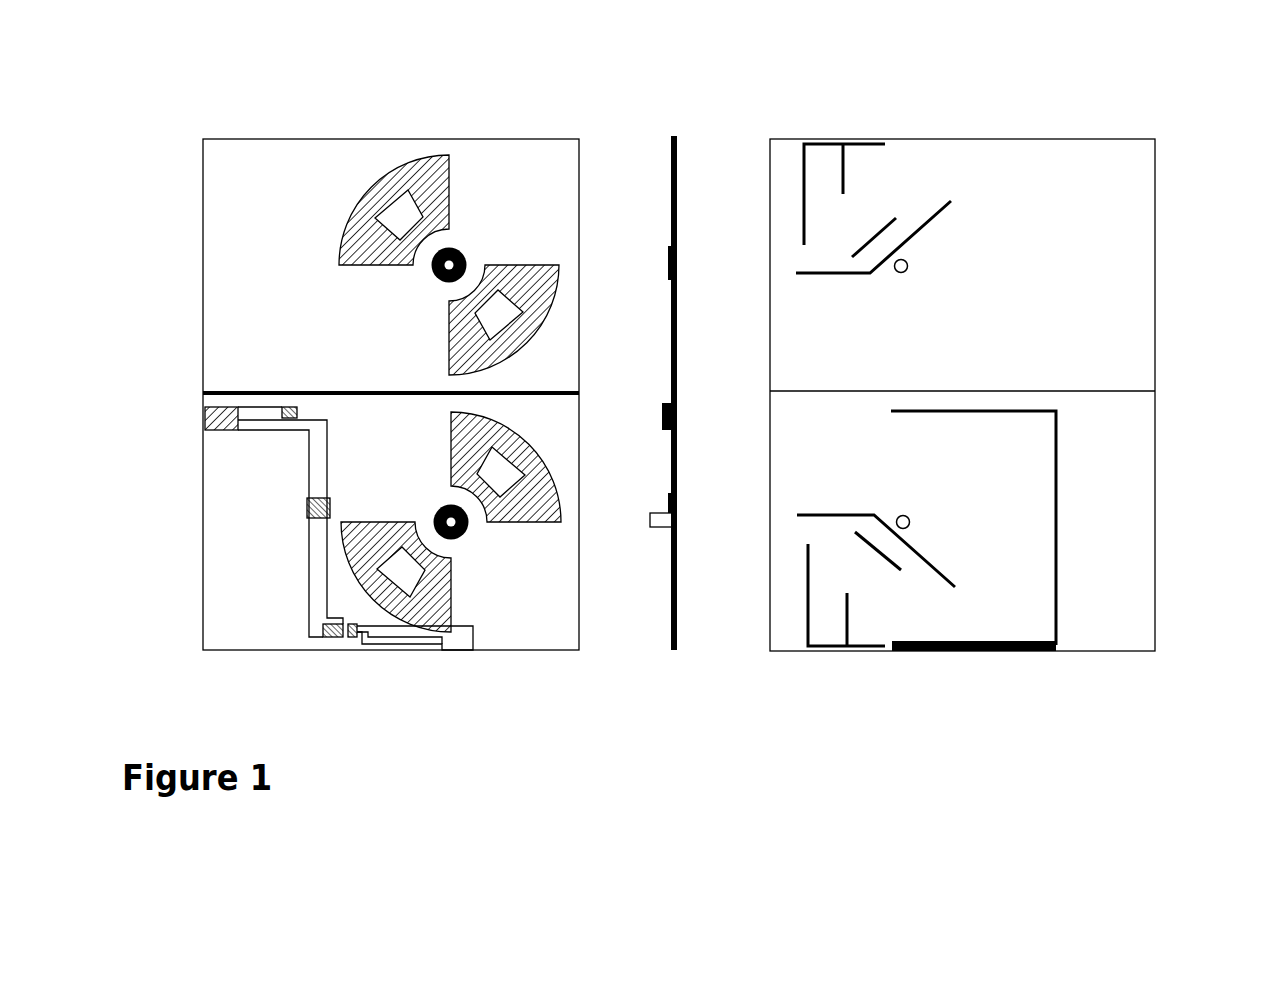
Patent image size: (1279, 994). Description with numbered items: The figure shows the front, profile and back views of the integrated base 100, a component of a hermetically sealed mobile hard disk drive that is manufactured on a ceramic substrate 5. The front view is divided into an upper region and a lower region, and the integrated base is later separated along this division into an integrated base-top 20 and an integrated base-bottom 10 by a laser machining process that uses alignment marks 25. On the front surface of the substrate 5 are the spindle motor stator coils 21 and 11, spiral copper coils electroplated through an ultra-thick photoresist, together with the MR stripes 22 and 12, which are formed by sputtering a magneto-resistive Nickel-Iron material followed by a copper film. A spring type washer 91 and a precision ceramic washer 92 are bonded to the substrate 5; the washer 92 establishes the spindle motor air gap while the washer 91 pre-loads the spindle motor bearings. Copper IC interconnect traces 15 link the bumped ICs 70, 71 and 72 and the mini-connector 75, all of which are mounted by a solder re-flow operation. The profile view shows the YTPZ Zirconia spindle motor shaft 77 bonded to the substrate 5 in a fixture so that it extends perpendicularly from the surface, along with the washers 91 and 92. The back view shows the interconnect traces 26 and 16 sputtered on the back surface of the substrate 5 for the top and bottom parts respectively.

The integrated base 100 is at (195, 353).
The ceramic substrate 5 is at (250, 216).
The integrated base-top 20 is at (390, 132).
The integrated base-bottom 10 is at (394, 658).
The alignment marks 25 is at (533, 392).
The spindle motor stator coil 21 is at (472, 348).
The MR stripe 22 is at (477, 220).
The spring type washer 91 is at (468, 263).
The spindle motor stator coil 11 is at (470, 441).
The MR stripe 12 is at (478, 567).
The precision ceramic washer 92 is at (472, 525).
The IC interconnect trace 15 is at (318, 572).
The mini-connector 75 is at (205, 420).
The bumped IC 72 is at (297, 412).
The bumped IC 71 is at (305, 508).
The bumped IC 70 is at (395, 651).
The spindle motor shaft 77 is at (670, 517).
The IC interconnect trace 26 is at (962, 262).
The IC interconnect trace 16 is at (972, 509).